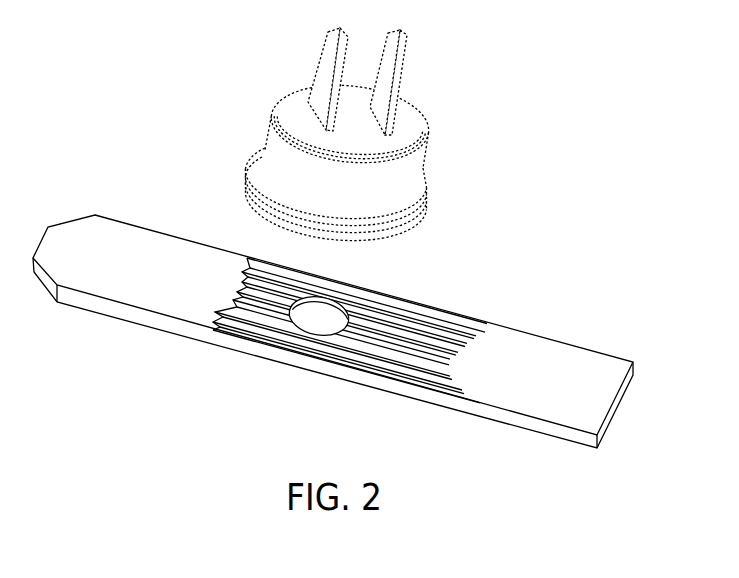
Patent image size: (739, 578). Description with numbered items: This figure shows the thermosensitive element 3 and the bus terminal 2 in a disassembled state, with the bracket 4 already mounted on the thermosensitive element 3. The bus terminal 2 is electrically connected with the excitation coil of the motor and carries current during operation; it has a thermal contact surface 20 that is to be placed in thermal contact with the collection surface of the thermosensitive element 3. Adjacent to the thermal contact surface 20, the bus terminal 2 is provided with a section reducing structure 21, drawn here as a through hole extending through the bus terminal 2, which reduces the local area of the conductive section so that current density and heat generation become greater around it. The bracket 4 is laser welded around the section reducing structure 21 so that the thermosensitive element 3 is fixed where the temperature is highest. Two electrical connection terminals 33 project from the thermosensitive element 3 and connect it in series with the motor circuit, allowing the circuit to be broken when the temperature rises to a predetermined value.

The bus terminal 2 is at (147, 320).
The thermal contact surface 20 is at (312, 343).
The section reducing structure 21 is at (333, 300).
The thermosensitive element 3 is at (417, 130).
The electrical connection terminals 33 is at (347, 50).
The bracket 4 is at (424, 202).